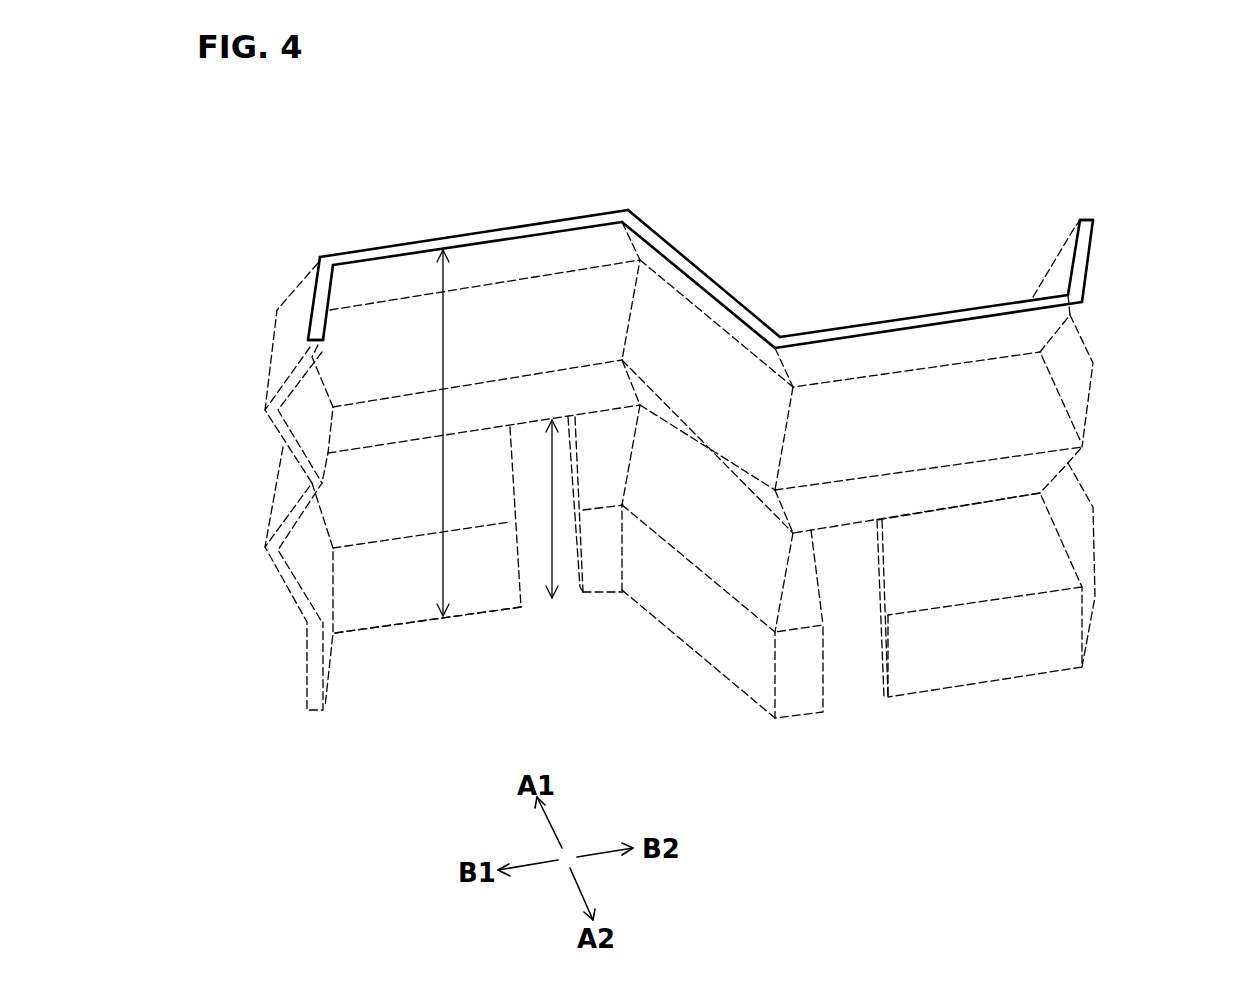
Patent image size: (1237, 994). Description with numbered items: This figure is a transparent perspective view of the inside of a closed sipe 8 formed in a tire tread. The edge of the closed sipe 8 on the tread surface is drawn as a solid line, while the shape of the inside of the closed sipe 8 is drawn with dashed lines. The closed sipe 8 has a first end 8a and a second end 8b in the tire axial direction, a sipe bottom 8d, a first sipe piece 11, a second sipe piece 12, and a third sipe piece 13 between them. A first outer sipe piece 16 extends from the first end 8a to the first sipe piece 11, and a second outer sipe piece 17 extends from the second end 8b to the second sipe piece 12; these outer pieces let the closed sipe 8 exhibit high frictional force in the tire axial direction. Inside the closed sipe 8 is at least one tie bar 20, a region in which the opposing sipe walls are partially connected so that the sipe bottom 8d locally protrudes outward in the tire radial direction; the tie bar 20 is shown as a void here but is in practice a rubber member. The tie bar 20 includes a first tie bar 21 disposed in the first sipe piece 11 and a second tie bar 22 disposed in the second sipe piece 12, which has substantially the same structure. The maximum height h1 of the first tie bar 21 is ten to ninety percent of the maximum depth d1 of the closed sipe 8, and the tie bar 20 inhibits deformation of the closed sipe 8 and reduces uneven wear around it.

The closed sipe 8 is at (316, 212).
The first end 8a is at (318, 344).
The second end 8b is at (1086, 216).
The sipe bottom 8d is at (412, 622).
The first sipe piece 11 is at (405, 245).
The second sipe piece 12 is at (908, 323).
The third sipe piece 13 is at (708, 288).
The first outer sipe piece 16 is at (323, 298).
The second outer sipe piece 17 is at (1082, 262).
The tie bar 20 is at (537, 545).
The first tie bar 21 is at (565, 550).
The second tie bar 22 is at (852, 663).
The maximum depth d1 is at (443, 323).
The maximum height h1 is at (552, 463).